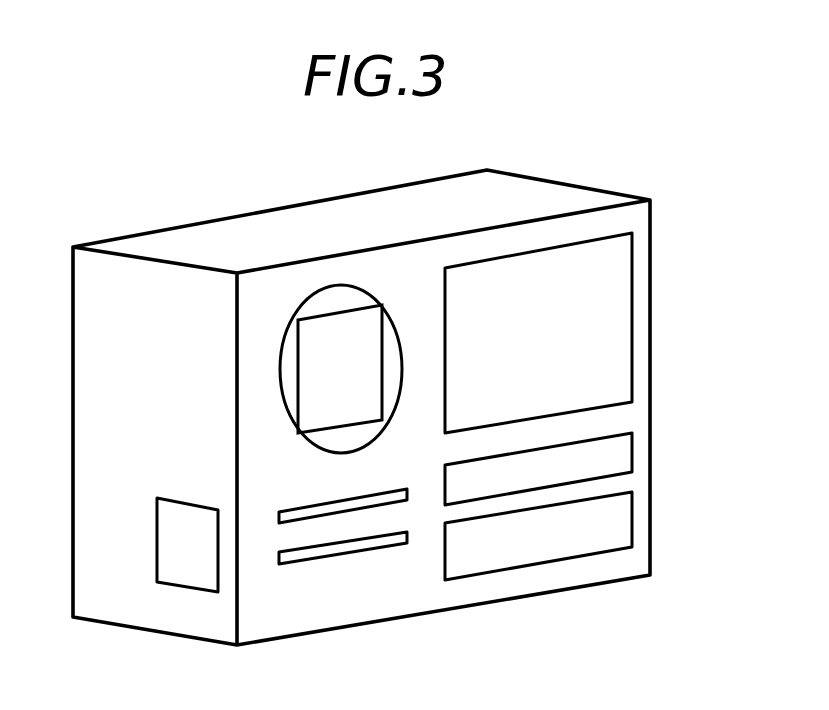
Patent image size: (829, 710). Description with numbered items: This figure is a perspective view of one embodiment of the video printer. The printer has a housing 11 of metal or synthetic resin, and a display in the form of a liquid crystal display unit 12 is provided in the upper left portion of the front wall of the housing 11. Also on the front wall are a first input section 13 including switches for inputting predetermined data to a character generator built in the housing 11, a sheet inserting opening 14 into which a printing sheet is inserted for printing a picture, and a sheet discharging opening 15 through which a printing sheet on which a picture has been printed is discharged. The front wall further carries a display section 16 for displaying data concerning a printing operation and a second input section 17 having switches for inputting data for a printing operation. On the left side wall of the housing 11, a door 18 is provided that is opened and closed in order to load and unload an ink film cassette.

The housing 11 is at (568, 203).
The liquid crystal display unit 12 is at (372, 346).
The first input section 13 is at (620, 308).
The sheet inserting opening 14 is at (297, 508).
The sheet discharging opening 15 is at (305, 565).
The display section 16 is at (622, 456).
The second input section 17 is at (622, 520).
The door 18 is at (172, 537).